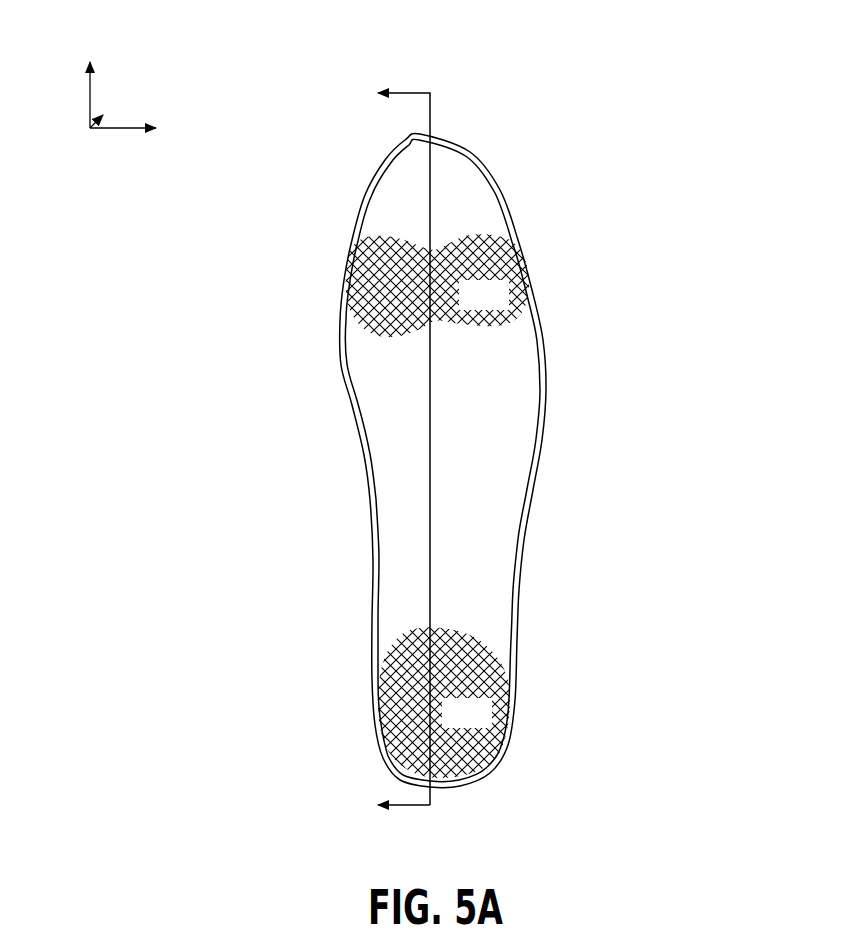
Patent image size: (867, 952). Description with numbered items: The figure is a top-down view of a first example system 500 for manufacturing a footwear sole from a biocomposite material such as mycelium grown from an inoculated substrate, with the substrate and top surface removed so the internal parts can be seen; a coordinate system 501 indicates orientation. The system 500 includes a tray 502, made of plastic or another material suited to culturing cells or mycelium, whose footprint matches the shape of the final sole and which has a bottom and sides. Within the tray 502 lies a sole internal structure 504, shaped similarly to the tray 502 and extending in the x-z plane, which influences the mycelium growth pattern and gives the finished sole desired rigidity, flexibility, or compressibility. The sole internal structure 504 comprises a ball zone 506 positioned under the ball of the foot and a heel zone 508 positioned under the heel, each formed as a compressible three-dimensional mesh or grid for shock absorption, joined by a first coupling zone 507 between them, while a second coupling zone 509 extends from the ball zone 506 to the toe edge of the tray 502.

The system 500 is at (661, 34).
The coordinate system 501 is at (147, 88).
The tray 502 is at (453, 141).
The sole internal structure 504 is at (535, 367).
The ball zone 506 is at (500, 307).
The first coupling zone 507 is at (483, 460).
The heel zone 508 is at (482, 725).
The second coupling zone 509 is at (415, 207).